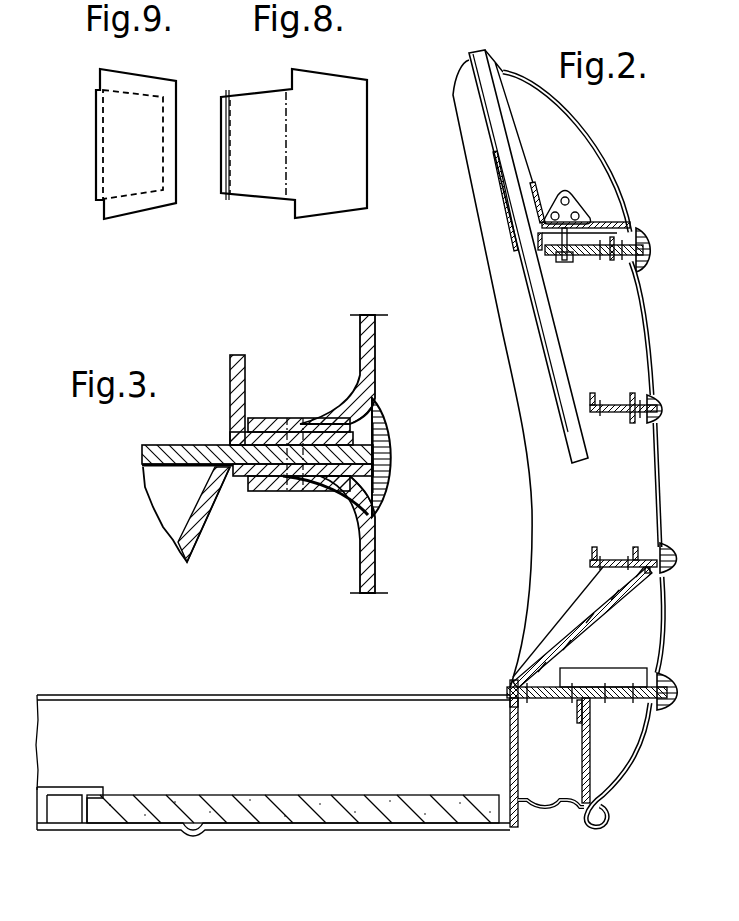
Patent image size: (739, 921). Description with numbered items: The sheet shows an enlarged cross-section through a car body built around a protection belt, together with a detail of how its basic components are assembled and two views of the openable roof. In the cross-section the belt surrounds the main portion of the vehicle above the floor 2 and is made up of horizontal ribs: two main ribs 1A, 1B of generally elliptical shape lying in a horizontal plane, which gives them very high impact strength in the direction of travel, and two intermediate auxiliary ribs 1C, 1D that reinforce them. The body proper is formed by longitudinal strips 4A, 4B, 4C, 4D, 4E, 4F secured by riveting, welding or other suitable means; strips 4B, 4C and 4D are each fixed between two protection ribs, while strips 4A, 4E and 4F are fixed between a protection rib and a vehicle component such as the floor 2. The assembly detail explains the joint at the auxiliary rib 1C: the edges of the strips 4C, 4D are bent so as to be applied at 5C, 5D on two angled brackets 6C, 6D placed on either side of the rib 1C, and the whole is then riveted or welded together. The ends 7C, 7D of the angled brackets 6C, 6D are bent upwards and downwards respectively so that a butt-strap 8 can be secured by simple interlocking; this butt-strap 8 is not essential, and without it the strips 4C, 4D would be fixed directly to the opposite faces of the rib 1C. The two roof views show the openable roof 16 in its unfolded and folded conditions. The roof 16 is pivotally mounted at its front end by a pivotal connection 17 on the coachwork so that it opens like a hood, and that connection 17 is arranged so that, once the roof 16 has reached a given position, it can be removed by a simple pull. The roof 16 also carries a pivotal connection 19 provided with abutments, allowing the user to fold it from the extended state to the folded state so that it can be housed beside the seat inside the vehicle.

In FIG. 2, the main rib 1A is at (594, 250).
In FIG. 2, the main rib 1B is at (622, 700).
In FIG. 3, the auxiliary rib 1C is at (176, 452).
In FIG. 2, the auxiliary rib 1C is at (621, 560).
In FIG. 2, the auxiliary rib 1D is at (608, 412).
In FIG. 2, the floor 2 is at (347, 830).
In FIG. 2, the longitudinal strip 4A is at (598, 151).
In FIG. 2, the longitudinal strip 4B is at (645, 320).
In FIG. 3, the longitudinal strip 4C is at (374, 331).
In FIG. 2, the longitudinal strip 4C is at (657, 466).
In FIG. 3, the longitudinal strip 4D is at (376, 573).
In FIG. 2, the longitudinal strip 4D is at (660, 608).
In FIG. 2, the longitudinal strip 4E is at (625, 763).
In FIG. 2, the longitudinal strip 4F is at (548, 807).
In FIG. 3, the bent edge 5C is at (257, 420).
In FIG. 3, the bent edge 5D is at (271, 480).
In FIG. 3, the angled bracket 6C is at (281, 440).
In FIG. 3, the angled bracket 6D is at (321, 474).
In FIG. 3, the bracket end 7C is at (348, 430).
In FIG. 3, the bracket end 7D is at (381, 500).
In FIG. 3, the butt-strap 8 is at (389, 463).
In FIG. 9, the openable roof 16 is at (145, 88).
In FIG. 8, the openable roof 16 is at (342, 130).
In FIG. 8, the pivotal connection 17 is at (227, 201).
In FIG. 9, the pivotal connection 19 is at (96, 143).
In FIG. 8, the pivotal connection 19 is at (288, 118).